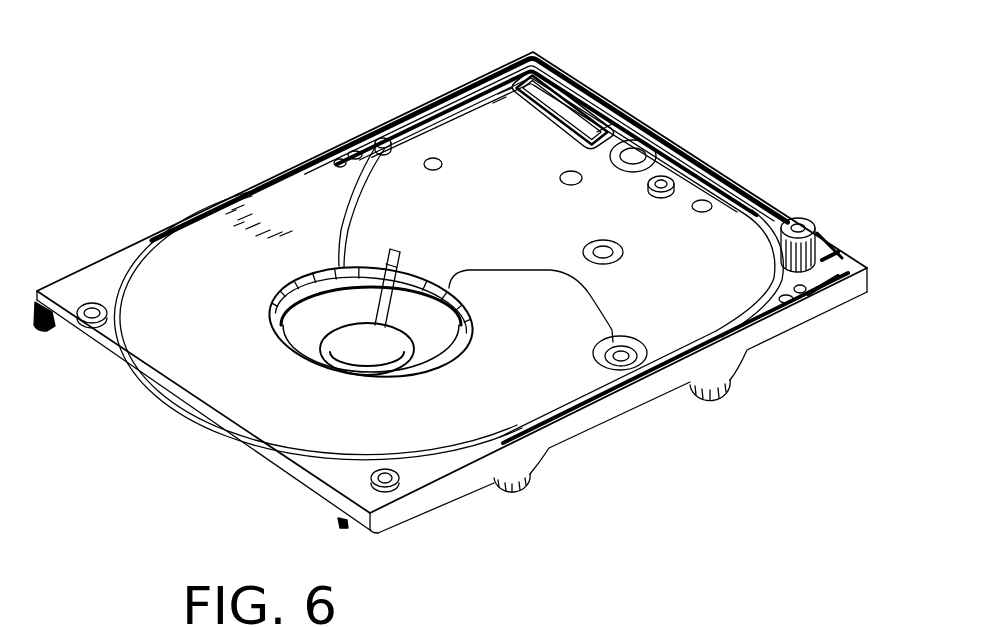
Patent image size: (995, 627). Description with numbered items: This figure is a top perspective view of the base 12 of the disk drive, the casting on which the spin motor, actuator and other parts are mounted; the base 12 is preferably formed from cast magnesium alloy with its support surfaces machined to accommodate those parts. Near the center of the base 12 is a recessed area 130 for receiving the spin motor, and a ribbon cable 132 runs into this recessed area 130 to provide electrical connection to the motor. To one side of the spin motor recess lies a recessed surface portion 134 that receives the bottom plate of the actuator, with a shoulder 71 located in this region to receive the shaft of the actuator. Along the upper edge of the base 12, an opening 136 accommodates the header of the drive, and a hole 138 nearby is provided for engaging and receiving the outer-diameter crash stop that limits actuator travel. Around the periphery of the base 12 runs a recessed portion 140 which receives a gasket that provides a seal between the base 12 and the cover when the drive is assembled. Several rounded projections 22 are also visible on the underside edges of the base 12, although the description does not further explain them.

The base 12 is at (88, 288).
The mounting feet 22 is at (722, 398).
The shoulder 71 is at (598, 241).
The recessed area 130 is at (363, 298).
The ribbon cable 132 is at (404, 253).
The recessed surface portion 134 is at (699, 293).
The opening 136 is at (534, 71).
The hole 138 is at (676, 178).
The recessed portion 140 is at (818, 230).